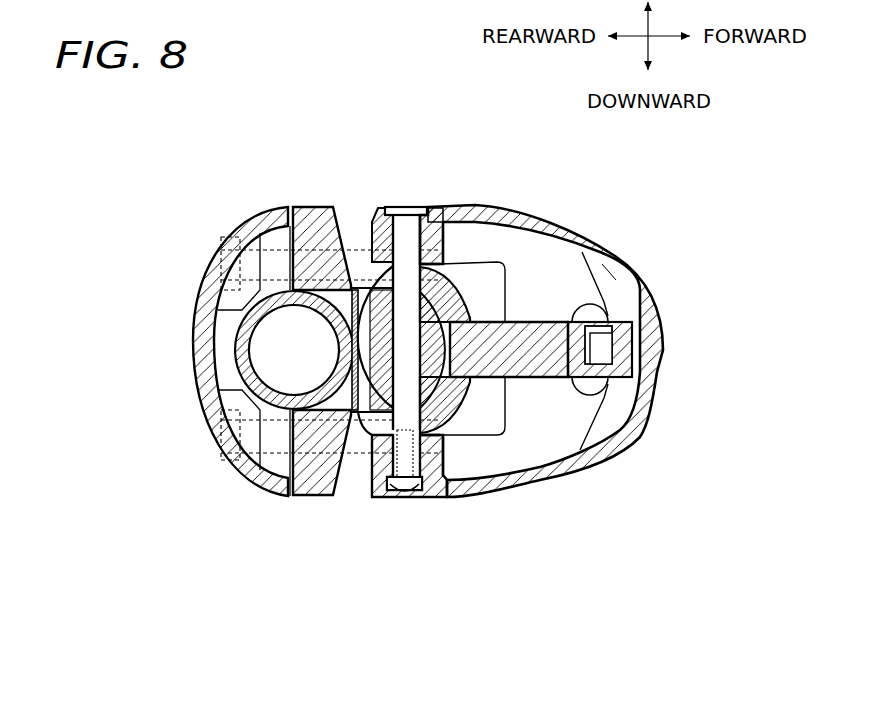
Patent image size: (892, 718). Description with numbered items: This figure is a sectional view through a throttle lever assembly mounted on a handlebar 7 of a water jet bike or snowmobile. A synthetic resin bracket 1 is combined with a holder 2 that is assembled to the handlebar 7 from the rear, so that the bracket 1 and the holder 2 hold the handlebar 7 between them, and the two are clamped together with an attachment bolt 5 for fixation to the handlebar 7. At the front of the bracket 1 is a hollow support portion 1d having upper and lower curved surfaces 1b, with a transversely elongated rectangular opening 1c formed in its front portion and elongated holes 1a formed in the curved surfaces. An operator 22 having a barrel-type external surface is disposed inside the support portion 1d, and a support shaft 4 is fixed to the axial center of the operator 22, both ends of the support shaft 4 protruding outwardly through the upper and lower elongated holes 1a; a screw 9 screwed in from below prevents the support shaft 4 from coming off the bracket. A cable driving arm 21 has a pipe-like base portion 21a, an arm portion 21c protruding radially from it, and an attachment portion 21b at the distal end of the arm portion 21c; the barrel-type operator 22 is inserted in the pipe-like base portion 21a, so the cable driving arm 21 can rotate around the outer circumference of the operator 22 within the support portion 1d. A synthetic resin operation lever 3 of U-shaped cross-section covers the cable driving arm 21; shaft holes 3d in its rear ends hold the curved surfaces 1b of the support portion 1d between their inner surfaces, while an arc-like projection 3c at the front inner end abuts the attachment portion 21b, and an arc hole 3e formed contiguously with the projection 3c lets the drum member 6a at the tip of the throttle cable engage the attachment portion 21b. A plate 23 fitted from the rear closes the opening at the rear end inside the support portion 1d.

The bracket 1 is at (306, 207).
The elongated holes 1a is at (443, 208).
The curved surfaces 1b is at (345, 208).
The opening 1c is at (522, 430).
The support portion 1d is at (452, 288).
The holder 2 is at (208, 292).
The operation lever 3 is at (578, 238).
The projection 3c is at (603, 268).
The shaft hole 3d is at (368, 210).
The arc hole 3e is at (612, 300).
The support shaft 4 is at (407, 225).
The attachment bolt 5 is at (232, 236).
The drum member 6a is at (600, 347).
The handlebar 7 is at (235, 465).
The screw 9 is at (405, 497).
The cable driving arm 21 is at (533, 390).
The pipe-like base portion 21a is at (482, 490).
The attachment portion 21b is at (607, 382).
The arm portion 21c is at (508, 283).
The operator 22 is at (342, 497).
The plate 23 is at (315, 497).